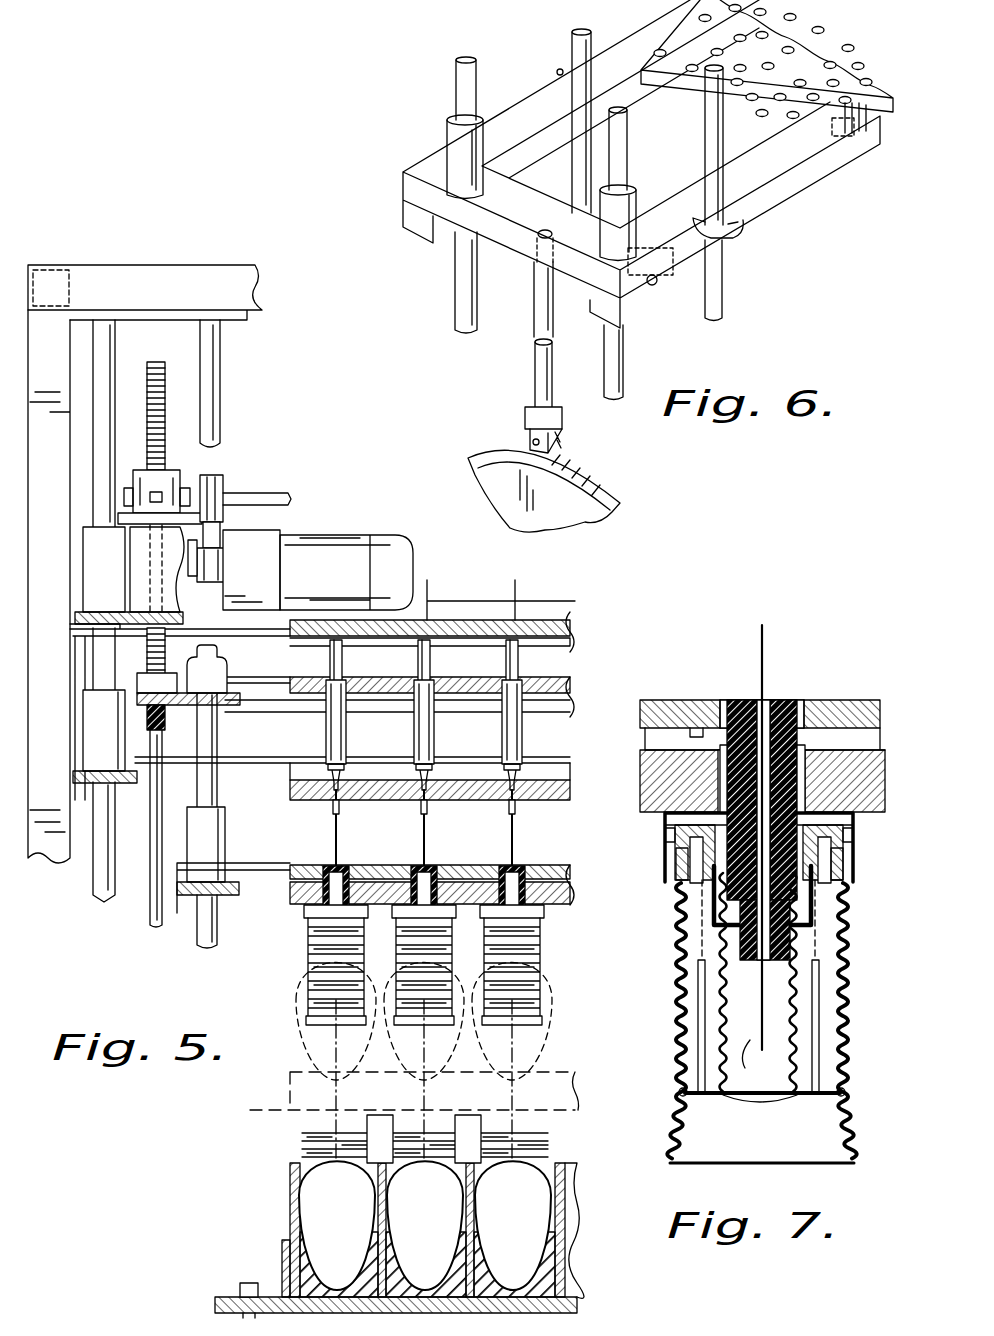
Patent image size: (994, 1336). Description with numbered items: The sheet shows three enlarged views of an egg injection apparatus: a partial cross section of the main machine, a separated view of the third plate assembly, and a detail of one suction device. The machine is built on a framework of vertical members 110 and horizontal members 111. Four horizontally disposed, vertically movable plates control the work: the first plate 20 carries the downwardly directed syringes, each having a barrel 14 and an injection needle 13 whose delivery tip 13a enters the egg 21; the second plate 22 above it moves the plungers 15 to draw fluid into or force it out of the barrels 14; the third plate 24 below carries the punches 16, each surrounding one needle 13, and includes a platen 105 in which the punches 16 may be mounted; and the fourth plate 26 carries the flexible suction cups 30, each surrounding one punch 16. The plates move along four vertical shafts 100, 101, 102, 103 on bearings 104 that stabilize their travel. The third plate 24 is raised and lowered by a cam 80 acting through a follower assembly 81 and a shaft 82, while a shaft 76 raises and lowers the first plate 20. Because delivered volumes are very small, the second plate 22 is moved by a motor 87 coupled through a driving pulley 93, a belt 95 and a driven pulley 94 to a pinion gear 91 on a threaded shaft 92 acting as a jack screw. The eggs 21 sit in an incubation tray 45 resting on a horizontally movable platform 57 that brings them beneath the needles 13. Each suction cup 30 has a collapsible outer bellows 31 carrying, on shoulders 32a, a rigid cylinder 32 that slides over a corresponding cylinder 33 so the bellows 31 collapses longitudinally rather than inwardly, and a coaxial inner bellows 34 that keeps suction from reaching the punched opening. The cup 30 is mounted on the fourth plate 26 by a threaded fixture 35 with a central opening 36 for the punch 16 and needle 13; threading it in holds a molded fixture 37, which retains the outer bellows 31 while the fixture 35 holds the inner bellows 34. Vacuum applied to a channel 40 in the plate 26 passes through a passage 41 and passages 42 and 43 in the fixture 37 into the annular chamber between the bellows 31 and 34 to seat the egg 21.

In FIG. 7, the injection needle 13 is at (704, 1025).
In FIG. 7, the delivery tip 13a is at (750, 1050).
In FIG. 5, the barrel 14 is at (347, 738).
In FIG. 5, the plunger 15 is at (343, 661).
In FIG. 5, the punch 16 is at (341, 841).
In FIG. 7, the punch 16 is at (765, 626).
In FIG. 5, the first plate 20 is at (574, 686).
In FIG. 5, the egg 21 is at (322, 1237).
In FIG. 5, the second plate 22 is at (554, 619).
In FIG. 5, the third plate 24 is at (571, 782).
In FIG. 6, the third plate 24 is at (808, 194).
In FIG. 5, the fourth plate 26 is at (568, 864).
In FIG. 7, the fourth plate 26 is at (852, 696).
In FIG. 5, the suction cup 30 is at (298, 965).
In FIG. 7, the suction cup 30 is at (662, 942).
In FIG. 7, the outer bellows 31 is at (850, 1055).
In FIG. 7, the cylinder 32 is at (832, 1028).
In FIG. 7, the shoulders 32a is at (679, 1090).
In FIG. 7, the cylinder 33 is at (838, 926).
In FIG. 7, the inner bellows 34 is at (726, 1104).
In FIG. 7, the threaded fixture 35 is at (745, 700).
In FIG. 7, the central longitudinally extending opening 36 is at (771, 700).
In FIG. 7, the molded fixture 37 is at (666, 868).
In FIG. 5, the channel 40 is at (328, 867).
In FIG. 7, the channel 40 is at (700, 728).
In FIG. 7, the passage 41 is at (806, 757).
In FIG. 7, the passage 42 is at (855, 832).
In FIG. 7, the passage 43 is at (846, 862).
In FIG. 5, the incubation tray 45 is at (290, 1202).
In FIG. 5, the platform 57 is at (224, 1298).
In FIG. 5, the shaft 76 is at (149, 906).
In FIG. 6, the cam 80 is at (598, 482).
In FIG. 6, the follower assembly 81 is at (562, 426).
In FIG. 6, the shaft 82 is at (534, 371).
In FIG. 5, the motor 87 is at (356, 544).
In FIG. 5, the pinion gear 91 is at (162, 482).
In FIG. 5, the threaded shaft 92 is at (167, 418).
In FIG. 5, the driving pulley 93 is at (208, 574).
In FIG. 5, the driven pulley 94 is at (216, 483).
In FIG. 5, the belt 95 is at (212, 533).
In FIG. 6, the vertical shaft 100 is at (455, 268).
In FIG. 5, the vertical shaft 101 is at (98, 438).
In FIG. 6, the vertical shaft 101 is at (622, 360).
In FIG. 5, the vertical shaft 102 is at (217, 372).
In FIG. 6, the vertical shaft 102 is at (723, 297).
In FIG. 6, the vertical shaft 103 is at (572, 53).
In FIG. 5, the bearing 104 is at (96, 726).
In FIG. 6, the bearing 104 is at (450, 141).
In FIG. 6, the platen 105 is at (852, 136).
In FIG. 5, the vertical member 110 is at (58, 358).
In FIG. 5, the horizontal member 111 is at (149, 283).